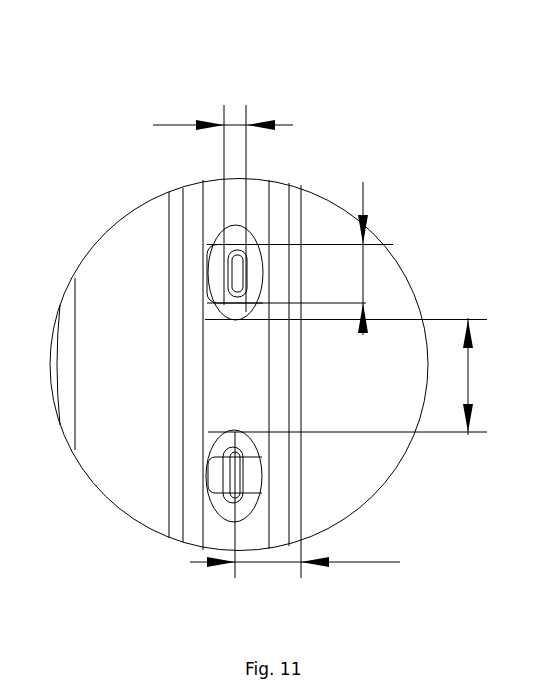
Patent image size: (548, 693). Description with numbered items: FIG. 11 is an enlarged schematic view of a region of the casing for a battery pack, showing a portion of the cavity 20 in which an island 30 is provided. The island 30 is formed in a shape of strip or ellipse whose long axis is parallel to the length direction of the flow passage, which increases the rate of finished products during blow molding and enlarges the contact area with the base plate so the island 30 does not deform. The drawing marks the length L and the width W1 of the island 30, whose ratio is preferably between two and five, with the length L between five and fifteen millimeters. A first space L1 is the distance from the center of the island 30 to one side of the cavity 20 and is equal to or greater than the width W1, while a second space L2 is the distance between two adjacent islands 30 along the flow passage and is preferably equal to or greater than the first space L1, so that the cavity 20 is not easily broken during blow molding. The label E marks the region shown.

The cavity 20 is at (212, 210).
The island 30 is at (230, 463).
The width of the island W1 is at (223, 206).
The length of the island L is at (370, 258).
The first space L1 is at (295, 552).
The second space L2 is at (481, 376).
The region E is at (252, 39).